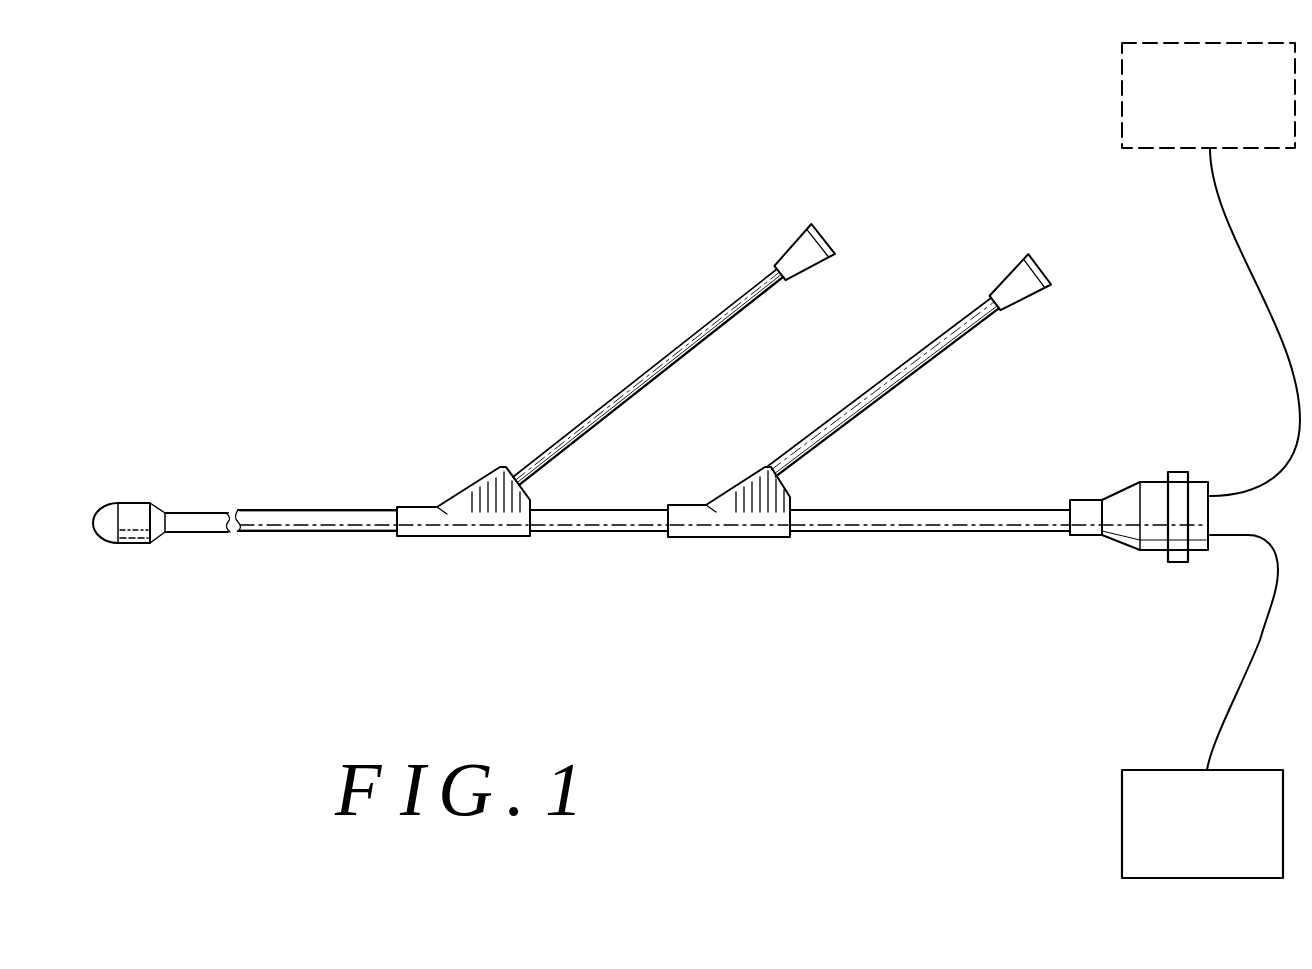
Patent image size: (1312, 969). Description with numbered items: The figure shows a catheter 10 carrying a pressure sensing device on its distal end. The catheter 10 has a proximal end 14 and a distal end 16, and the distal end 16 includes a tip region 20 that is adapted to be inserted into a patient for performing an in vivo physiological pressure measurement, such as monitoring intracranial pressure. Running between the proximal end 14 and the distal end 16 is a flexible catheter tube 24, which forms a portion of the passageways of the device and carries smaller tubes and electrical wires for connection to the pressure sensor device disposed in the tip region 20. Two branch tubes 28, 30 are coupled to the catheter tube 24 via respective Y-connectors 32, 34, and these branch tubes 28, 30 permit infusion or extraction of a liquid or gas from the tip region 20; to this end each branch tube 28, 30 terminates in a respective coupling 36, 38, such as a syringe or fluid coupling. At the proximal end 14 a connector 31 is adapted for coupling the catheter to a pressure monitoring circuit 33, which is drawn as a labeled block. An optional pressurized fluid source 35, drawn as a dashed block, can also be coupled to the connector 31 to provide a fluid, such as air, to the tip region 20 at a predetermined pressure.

The catheter 10 is at (408, 418).
The proximal end 14 is at (1147, 452).
The distal end 16 is at (99, 488).
The tip region 20 is at (151, 503).
The flexible catheter tube 24 is at (282, 533).
The branch tube 28 is at (703, 345).
The branch tube 30 is at (895, 390).
The connector 31 is at (1196, 490).
The Y-connector 32 is at (468, 520).
The pressure monitoring circuit 33 is at (1122, 798).
The Y-connector 34 is at (735, 520).
The pressurized fluid source 35 is at (1122, 88).
The coupling 36 is at (810, 272).
The coupling 38 is at (1025, 297).